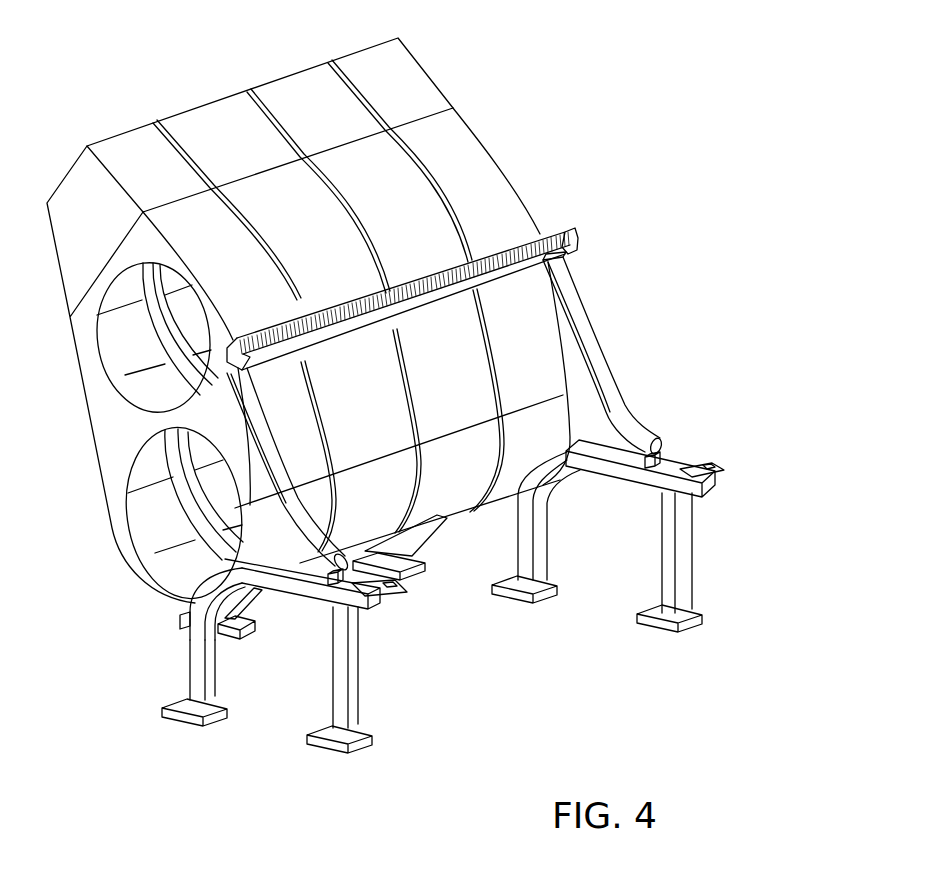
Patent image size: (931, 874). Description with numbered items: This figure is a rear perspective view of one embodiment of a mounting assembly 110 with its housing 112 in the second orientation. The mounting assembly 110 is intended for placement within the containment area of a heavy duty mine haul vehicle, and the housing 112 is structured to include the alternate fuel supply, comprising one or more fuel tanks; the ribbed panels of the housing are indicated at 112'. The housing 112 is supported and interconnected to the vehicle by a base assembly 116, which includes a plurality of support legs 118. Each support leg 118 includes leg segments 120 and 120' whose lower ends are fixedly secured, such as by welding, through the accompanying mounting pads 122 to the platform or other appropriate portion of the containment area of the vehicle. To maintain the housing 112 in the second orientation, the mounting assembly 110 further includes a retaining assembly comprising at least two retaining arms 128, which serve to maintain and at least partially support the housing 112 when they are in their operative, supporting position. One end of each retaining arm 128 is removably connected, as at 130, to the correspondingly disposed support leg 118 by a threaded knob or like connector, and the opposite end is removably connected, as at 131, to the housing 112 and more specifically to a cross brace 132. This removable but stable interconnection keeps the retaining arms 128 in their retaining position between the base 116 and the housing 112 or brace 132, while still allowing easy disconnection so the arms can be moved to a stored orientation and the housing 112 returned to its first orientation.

The mounting assembly 110 is at (687, 233).
The housing 112 is at (360, 322).
The rib / panel of container body 112' is at (347, 289).
The base assembly 116 is at (715, 555).
The support legs 118 is at (383, 645).
The leg segment 120 is at (161, 635).
The leg segment 120' is at (513, 613).
The mounting pads 122 is at (183, 710).
The retaining arms 128 is at (618, 393).
The opposite end 130 is at (667, 457).
The opposite end 131 is at (560, 268).
The cross brace 132 is at (567, 222).